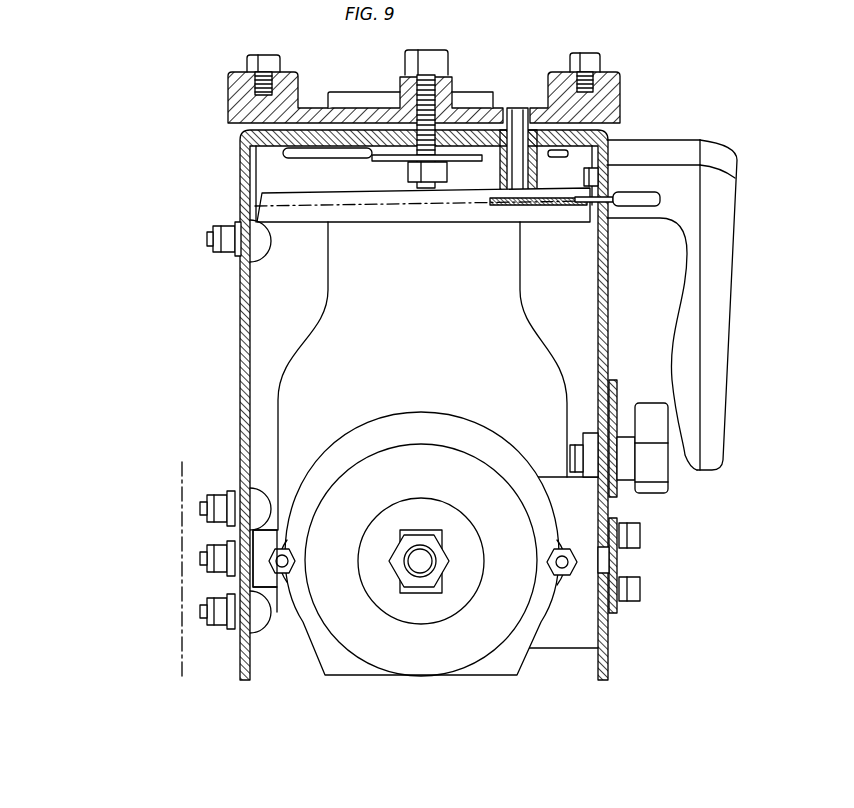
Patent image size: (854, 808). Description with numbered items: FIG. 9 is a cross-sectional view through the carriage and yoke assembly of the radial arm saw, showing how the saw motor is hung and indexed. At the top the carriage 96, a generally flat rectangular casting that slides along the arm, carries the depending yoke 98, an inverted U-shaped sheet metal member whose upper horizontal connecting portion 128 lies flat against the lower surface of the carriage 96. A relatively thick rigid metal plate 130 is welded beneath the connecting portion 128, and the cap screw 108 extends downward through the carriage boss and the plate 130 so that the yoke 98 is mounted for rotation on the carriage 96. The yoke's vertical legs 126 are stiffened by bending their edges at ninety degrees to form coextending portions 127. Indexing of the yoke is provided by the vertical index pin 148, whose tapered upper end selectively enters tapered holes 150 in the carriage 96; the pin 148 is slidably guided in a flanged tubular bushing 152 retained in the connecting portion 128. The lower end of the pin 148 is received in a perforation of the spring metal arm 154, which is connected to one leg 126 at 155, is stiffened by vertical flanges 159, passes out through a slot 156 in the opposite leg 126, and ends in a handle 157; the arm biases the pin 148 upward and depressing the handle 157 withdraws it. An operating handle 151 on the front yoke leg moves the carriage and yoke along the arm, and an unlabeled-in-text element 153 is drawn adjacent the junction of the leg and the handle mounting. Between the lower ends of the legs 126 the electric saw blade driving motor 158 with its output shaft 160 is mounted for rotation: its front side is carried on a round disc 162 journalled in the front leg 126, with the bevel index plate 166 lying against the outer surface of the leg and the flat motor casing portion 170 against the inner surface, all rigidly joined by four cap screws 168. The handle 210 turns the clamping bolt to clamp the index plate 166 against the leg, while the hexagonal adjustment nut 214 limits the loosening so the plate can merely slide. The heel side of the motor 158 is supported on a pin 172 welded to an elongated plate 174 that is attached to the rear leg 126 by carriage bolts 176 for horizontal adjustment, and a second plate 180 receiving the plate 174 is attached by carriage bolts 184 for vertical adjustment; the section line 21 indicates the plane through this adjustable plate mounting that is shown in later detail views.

The carriage 96 is at (620, 90).
The yoke 98 is at (242, 176).
The cap screw 108 is at (440, 56).
The vertical legs 126 is at (240, 338).
The coextending portions 127 is at (310, 328).
The upper horizontal connecting portion 128 is at (337, 133).
The rigid metal plate 130 is at (262, 148).
The index pin 148 is at (512, 176).
The tapered holes 150 is at (510, 110).
The operating handle 151 is at (737, 206).
The tubular bushing 152 is at (537, 178).
The strap 153 is at (608, 155).
The arm 154 is at (497, 212).
The arm connection 155 is at (255, 242).
The slot 156 is at (605, 205).
The handle 157 is at (628, 194).
The electric saw blade driving motor 158 is at (482, 680).
The vertical flanges 159 is at (386, 178).
The output shaft 160 is at (438, 562).
The round disc 162 is at (600, 588).
The bevel index plate 166 is at (611, 385).
The cap screws 168 is at (638, 585).
The motor casing portion 170 is at (560, 480).
The pin 172 is at (260, 530).
The elongated plate 174 is at (248, 578).
The carriage bolts 176 is at (228, 548).
The second plate 180 is at (248, 492).
The carriage bolts 184 is at (242, 500).
The handle 210 is at (650, 494).
The hexagonal adjustment nut 214 is at (585, 440).
The section line 21 is at (182, 477).